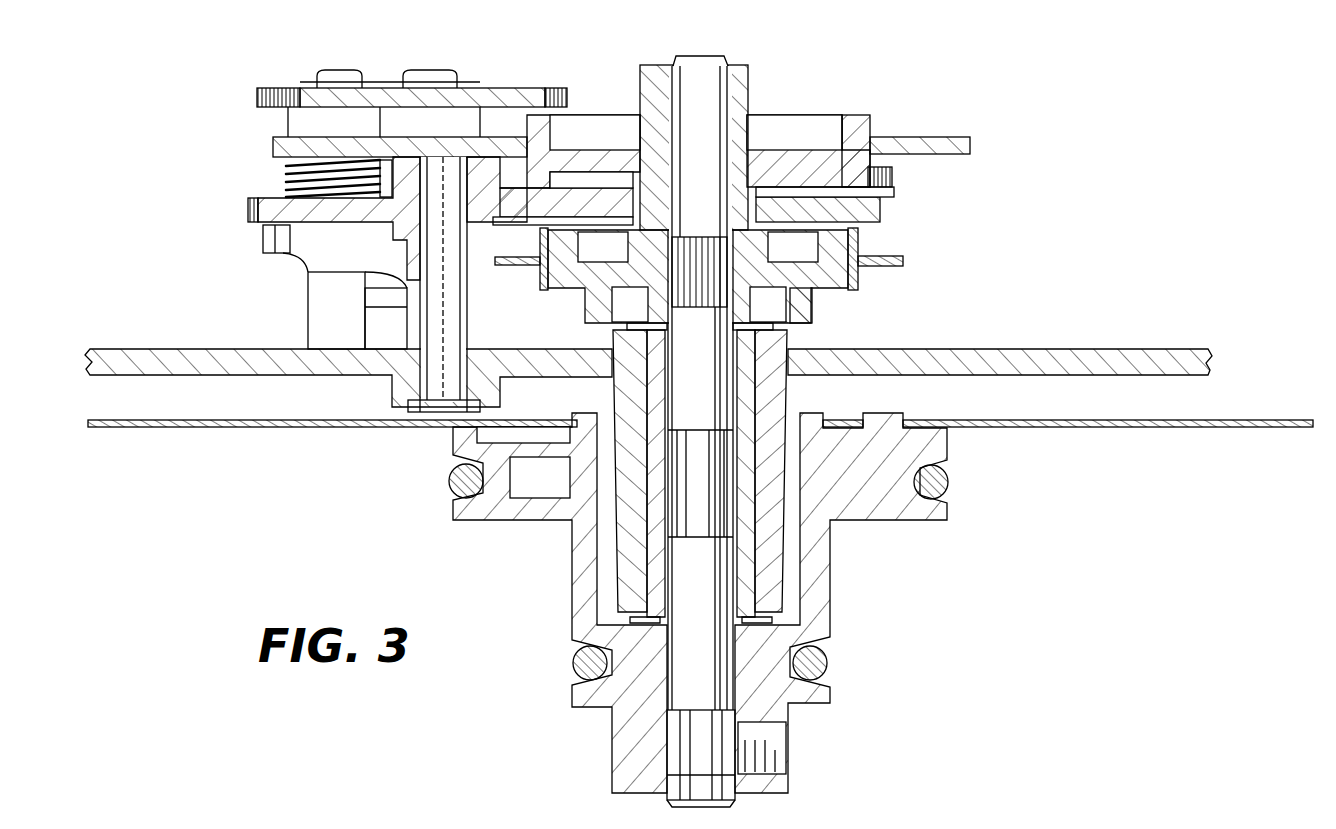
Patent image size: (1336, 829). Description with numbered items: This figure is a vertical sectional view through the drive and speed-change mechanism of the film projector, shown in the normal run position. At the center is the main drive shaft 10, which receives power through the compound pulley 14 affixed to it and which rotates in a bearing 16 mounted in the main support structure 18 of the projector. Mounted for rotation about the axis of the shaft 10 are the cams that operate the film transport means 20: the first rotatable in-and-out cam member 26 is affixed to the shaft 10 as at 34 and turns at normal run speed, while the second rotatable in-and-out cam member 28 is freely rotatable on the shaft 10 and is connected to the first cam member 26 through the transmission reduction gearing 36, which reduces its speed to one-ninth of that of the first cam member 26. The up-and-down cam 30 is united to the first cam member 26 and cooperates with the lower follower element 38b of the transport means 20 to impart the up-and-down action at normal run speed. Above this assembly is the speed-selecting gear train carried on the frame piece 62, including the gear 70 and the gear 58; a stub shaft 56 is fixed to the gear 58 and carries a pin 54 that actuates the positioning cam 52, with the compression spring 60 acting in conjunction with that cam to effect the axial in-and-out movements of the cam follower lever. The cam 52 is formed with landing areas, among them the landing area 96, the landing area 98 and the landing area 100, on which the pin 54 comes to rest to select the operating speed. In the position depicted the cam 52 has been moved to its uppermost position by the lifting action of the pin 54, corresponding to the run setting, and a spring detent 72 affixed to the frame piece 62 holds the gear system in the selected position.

The main drive shaft 10 is at (720, 646).
The compound pulley 14 is at (825, 550).
The bearing 16 is at (760, 372).
The main support structure 18 is at (1032, 349).
The film transport means 20 is at (903, 258).
The first rotatable in-and-out cam member 26 is at (822, 313).
The second rotatable in-and-out cam member 28 is at (870, 122).
The up-and-down cam 30 is at (835, 245).
The affixing of first cam member to shaft 34 is at (715, 265).
The transmission reduction gearing 36 is at (622, 230).
The lower follower element 38b is at (536, 282).
The cam 52 is at (262, 241).
The pin 54 is at (395, 297).
The stub shaft 56 is at (318, 315).
The gear 58 is at (285, 92).
The compression spring 60 is at (288, 172).
The frame piece 62 is at (300, 146).
The gear 70 is at (510, 92).
The spring detent 72 is at (940, 486).
The landing area 96 is at (393, 284).
The landing area 98 is at (332, 272).
The landing area 100 is at (283, 255).